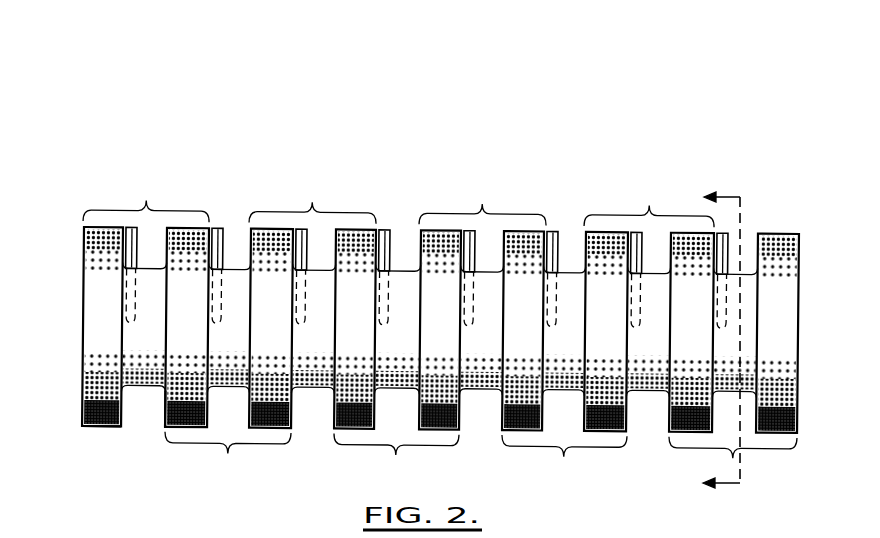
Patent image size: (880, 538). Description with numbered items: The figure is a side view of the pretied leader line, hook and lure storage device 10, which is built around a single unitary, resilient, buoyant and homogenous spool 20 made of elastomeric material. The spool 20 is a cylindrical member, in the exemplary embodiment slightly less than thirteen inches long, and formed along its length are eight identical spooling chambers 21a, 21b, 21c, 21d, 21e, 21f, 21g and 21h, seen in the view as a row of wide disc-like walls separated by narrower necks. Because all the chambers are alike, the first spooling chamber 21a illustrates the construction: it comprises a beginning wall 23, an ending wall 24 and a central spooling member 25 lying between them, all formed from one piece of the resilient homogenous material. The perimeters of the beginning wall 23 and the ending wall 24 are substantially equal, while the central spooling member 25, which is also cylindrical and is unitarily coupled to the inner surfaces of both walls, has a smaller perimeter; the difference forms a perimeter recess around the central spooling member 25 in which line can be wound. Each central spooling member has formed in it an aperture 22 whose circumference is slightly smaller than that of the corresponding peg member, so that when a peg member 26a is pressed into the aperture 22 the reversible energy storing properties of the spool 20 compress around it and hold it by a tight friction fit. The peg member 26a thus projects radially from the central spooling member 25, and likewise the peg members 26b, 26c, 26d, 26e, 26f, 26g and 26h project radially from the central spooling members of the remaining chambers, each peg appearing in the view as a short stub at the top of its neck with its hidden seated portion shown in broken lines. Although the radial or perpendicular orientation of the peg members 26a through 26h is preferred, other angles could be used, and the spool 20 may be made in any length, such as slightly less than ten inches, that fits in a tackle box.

The pretied leader line, hook and lure storage device 10 is at (199, 88).
The spool 20 is at (778, 317).
The spooling chamber 21a is at (157, 207).
The spooling chamber 21b is at (212, 443).
The spooling chamber 21c is at (285, 211).
The spooling chamber 21d is at (425, 444).
The spooling chamber 21e is at (458, 212).
The spooling chamber 21f is at (593, 447).
The spooling chamber 21g is at (628, 213).
The spooling chamber 21h is at (760, 452).
The aperture 22 is at (127, 307).
The beginning wall 23 is at (82, 426).
The ending wall 24 is at (168, 426).
The central spooling member 25 is at (143, 387).
The peg member 26a is at (130, 244).
The peg member 26b is at (218, 227).
The peg member 26c is at (300, 232).
The peg member 26d is at (384, 230).
The peg member 26e is at (471, 236).
The peg member 26f is at (553, 238).
The peg member 26g is at (641, 232).
The peg member 26h is at (728, 233).